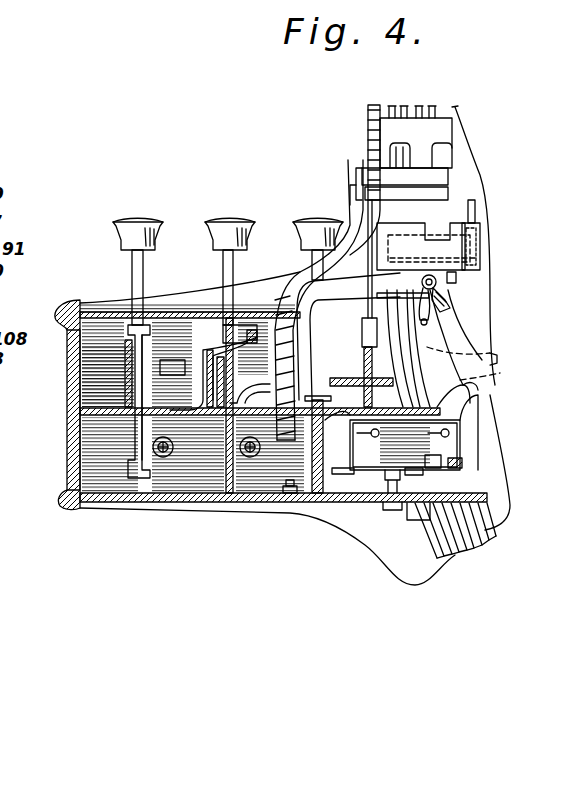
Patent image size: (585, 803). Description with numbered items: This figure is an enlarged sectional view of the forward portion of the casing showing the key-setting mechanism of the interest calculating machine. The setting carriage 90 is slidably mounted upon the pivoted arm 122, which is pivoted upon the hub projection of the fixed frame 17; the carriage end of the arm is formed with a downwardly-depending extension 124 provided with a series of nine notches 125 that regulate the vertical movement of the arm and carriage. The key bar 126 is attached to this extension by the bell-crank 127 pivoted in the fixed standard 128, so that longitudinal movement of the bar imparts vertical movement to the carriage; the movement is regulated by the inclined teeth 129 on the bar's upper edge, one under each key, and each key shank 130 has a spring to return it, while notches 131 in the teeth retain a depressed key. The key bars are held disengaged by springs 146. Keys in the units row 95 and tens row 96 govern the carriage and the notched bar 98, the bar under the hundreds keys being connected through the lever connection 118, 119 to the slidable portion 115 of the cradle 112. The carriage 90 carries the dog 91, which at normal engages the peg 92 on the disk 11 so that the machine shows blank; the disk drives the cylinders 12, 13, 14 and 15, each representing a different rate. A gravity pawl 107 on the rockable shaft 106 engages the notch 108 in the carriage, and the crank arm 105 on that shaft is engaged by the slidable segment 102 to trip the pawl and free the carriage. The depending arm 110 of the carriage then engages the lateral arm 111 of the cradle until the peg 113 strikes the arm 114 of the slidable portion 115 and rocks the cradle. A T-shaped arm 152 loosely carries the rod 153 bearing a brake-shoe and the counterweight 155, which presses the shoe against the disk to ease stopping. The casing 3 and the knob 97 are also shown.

The pipe 3 is at (427, 530).
The disk 11 is at (466, 136).
The cylinder 12 is at (396, 107).
The cylinder 13 is at (404, 108).
The cylinder 14 is at (420, 108).
The inside cylinder 15 is at (432, 107).
The fixed frame 17 is at (407, 152).
The setting carriage 90 is at (478, 252).
The dog 91 is at (477, 203).
The peg 92 is at (480, 229).
The units row 95 is at (147, 197).
The tens row 96 is at (220, 217).
The knob 97 is at (308, 227).
The notched bar 98 is at (361, 370).
The slidable segment 102 is at (490, 370).
The crank arm 105 is at (430, 318).
The rockable shaft 106 is at (437, 285).
The gravity pawl 107 is at (452, 308).
The notch 108 is at (413, 270).
The depending arm 110 is at (305, 317).
The lateral arm 111 is at (374, 415).
The cradle 112 is at (343, 473).
The peg 113 is at (455, 278).
The arm 114 is at (474, 386).
The slidable portion 115 is at (455, 442).
The lever connection 118 is at (292, 502).
The lever connection 119 is at (373, 487).
The pivoted arm 122 is at (387, 173).
The depending extension 124 is at (287, 290).
The notches 125 is at (313, 458).
The key bar 126 is at (143, 450).
The bell-crank 127 is at (210, 340).
The fixed standard 128 is at (207, 403).
The inclined teeth 129 is at (147, 343).
The key shank 130 is at (77, 375).
The notches 131 is at (178, 356).
The springs 146 is at (170, 462).
The T-shaped arm 152 is at (380, 197).
The rod 153 is at (383, 197).
The counterweight 155 is at (353, 303).